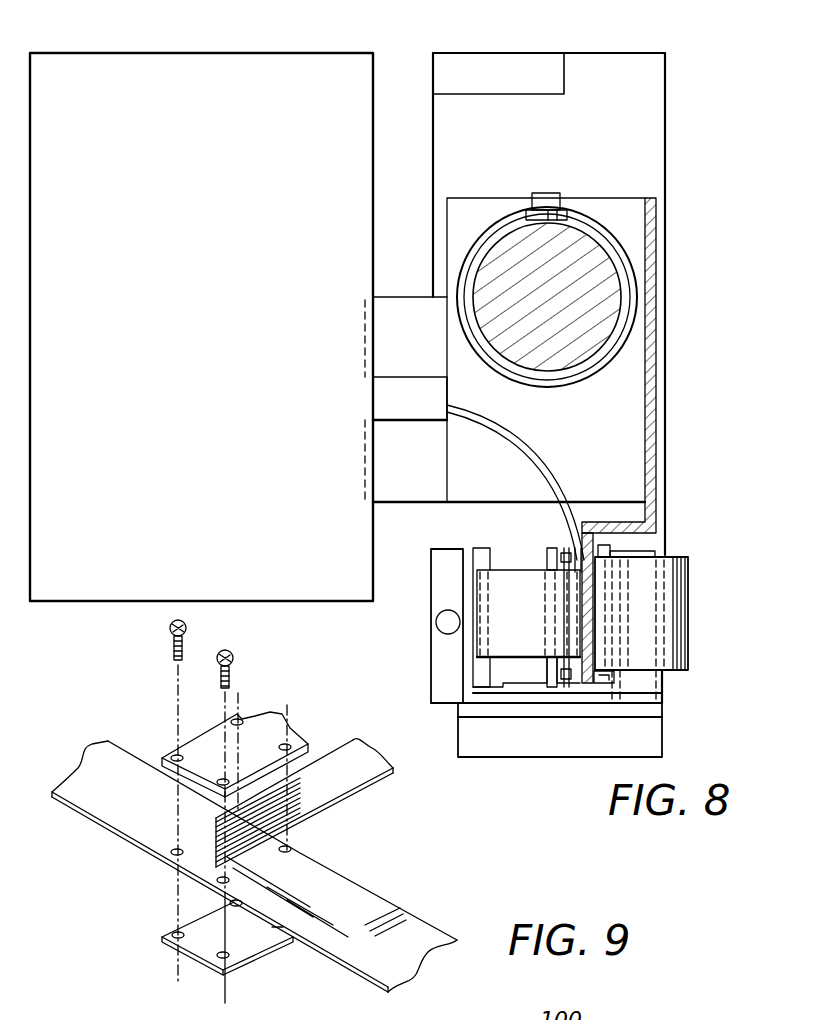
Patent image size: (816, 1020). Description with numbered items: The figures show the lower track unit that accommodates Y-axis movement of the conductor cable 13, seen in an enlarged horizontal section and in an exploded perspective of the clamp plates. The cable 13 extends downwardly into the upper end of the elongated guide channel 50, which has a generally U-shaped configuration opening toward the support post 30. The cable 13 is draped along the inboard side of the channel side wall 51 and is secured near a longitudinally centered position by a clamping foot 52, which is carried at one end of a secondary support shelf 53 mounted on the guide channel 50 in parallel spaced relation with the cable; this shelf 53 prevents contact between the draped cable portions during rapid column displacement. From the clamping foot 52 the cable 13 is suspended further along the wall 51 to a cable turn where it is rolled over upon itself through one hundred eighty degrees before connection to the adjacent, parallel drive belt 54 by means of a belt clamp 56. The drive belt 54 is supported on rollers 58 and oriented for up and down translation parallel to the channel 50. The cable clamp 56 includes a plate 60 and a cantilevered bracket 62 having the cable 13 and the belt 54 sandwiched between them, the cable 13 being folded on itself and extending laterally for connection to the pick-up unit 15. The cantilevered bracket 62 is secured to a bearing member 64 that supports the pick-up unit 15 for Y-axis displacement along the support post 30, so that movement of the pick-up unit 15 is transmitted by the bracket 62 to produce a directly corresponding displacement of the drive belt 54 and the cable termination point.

In FIG. 8, the conductor cable 13 is at (513, 444).
In FIG. 9, the conductor cable 13 is at (309, 790).
In FIG. 8, the cassette pick-up and release unit 15 is at (221, 93).
In FIG. 8, the support post 30 is at (577, 295).
In FIG. 8, the guide channel 50 is at (547, 737).
In FIG. 8, the channel side wall 51 is at (470, 674).
In FIG. 8, the clamping foot 52 is at (482, 547).
In FIG. 8, the secondary support shelf 53 is at (537, 557).
In FIG. 8, the drive belt 54 is at (667, 617).
In FIG. 9, the drive belt 54 is at (333, 938).
In FIG. 8, the belt clamp 56 is at (604, 683).
In FIG. 8, the rollers 58 is at (643, 548).
In FIG. 8, the plate 60 is at (581, 547).
In FIG. 9, the plate 60 is at (240, 930).
In FIG. 8, the cantilevered bracket 62 is at (652, 442).
In FIG. 9, the cantilevered bracket 62 is at (257, 738).
In FIG. 8, the bearing member 64 is at (627, 232).